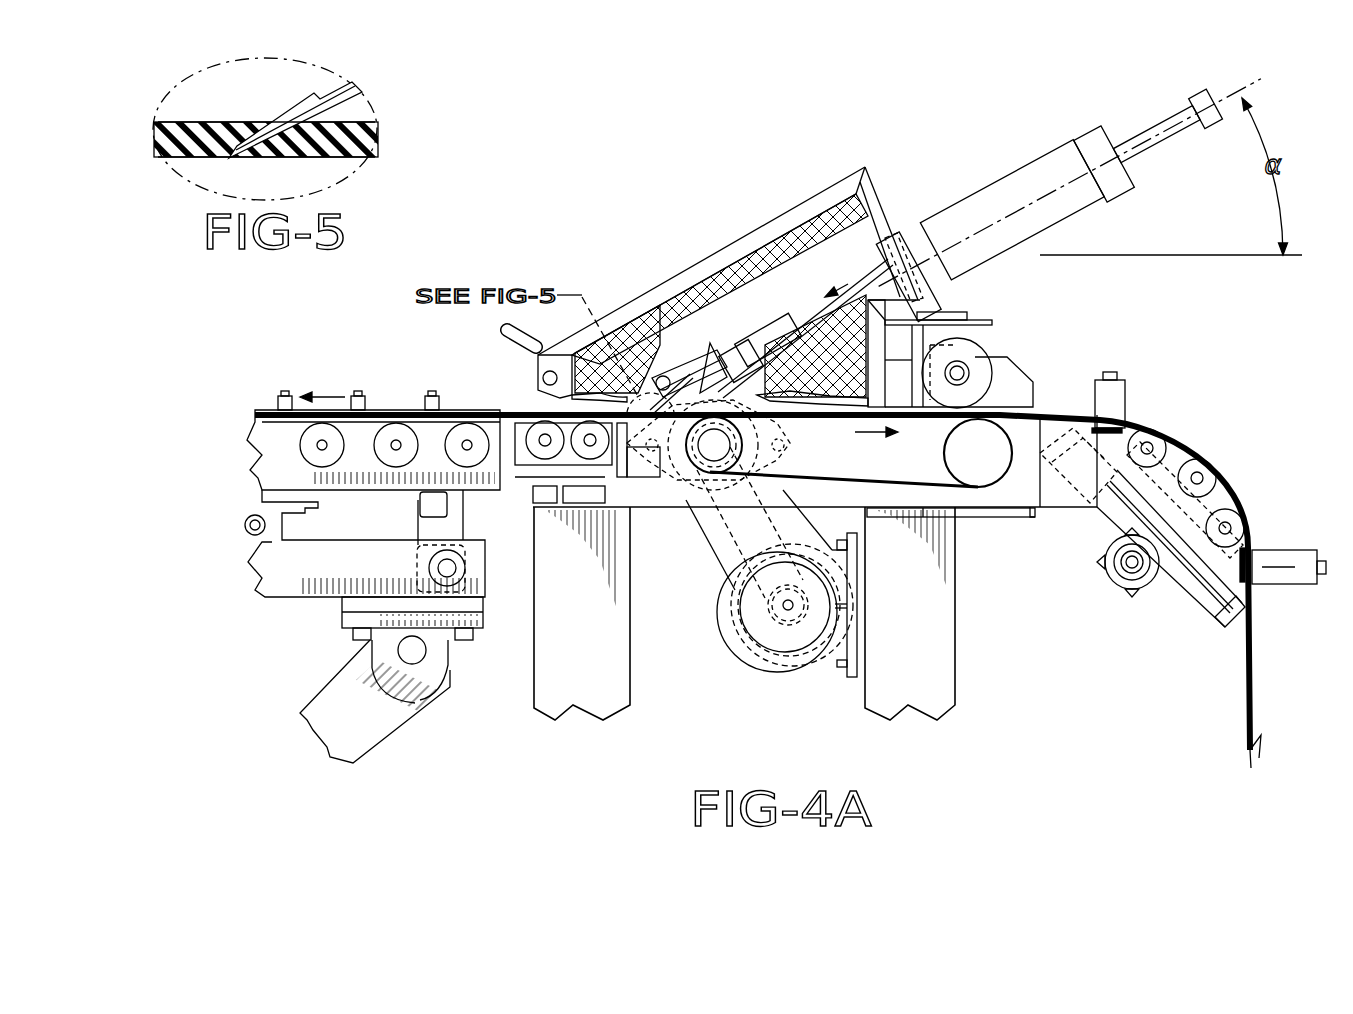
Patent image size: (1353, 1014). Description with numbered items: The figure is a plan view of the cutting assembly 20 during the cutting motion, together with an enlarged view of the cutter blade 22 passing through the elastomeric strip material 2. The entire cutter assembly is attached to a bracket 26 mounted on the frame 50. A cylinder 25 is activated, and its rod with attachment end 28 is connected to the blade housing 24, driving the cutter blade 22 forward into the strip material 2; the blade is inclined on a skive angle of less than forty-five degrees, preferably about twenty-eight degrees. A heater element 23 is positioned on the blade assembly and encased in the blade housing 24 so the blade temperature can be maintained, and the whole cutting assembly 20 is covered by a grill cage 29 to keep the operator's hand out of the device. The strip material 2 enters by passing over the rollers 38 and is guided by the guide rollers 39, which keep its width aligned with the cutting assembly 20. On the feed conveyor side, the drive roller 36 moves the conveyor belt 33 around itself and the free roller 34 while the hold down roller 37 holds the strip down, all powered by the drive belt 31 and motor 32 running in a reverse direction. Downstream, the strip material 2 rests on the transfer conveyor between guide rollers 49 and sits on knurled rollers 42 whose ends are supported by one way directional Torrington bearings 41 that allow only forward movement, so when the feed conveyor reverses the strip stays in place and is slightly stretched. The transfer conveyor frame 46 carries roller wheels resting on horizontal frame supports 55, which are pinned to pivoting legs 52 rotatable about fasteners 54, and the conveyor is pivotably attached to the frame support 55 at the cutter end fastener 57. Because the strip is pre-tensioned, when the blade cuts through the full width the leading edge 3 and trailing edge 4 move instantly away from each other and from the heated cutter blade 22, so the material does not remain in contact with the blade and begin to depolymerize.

In FIG. 5, the strip material 2 is at (160, 120).
In FIG. 4A, the strip material 2 is at (1260, 650).
In FIG. 5, the leading edge 3 is at (262, 158).
In FIG. 5, the trailing edge 4 is at (250, 121).
In FIG. 4A, the cutting assembly 20 is at (641, 200).
In FIG. 5, the cutter blade 22 is at (283, 122).
In FIG. 4A, the cutter blade 22 is at (648, 404).
In FIG. 4A, the heater element 23 is at (665, 376).
In FIG. 4A, the blade housing 24 is at (705, 358).
In FIG. 4A, the cylinder 25 is at (1022, 167).
In FIG. 4A, the bracket 26 is at (930, 277).
In FIG. 4A, the attachment end 28 is at (778, 337).
In FIG. 4A, the grill cage 29 is at (752, 230).
In FIG. 4A, the drive belt 31 is at (707, 540).
In FIG. 4A, the motor 32 is at (733, 648).
In FIG. 4A, the conveyor belt 33 is at (816, 478).
In FIG. 4A, the free roller 34 is at (1000, 447).
In FIG. 4A, the drive roller 36 is at (697, 462).
In FIG. 4A, the hold down roller 37 is at (975, 352).
In FIG. 4A, the rollers 38 is at (580, 452).
In FIG. 4A, the guide rollers 39 is at (1113, 380).
In FIG. 4A, the one way directional Torrington bearings 41 is at (400, 407).
In FIG. 4A, the knurled rollers 42 is at (468, 438).
In FIG. 4A, the frame of the transfer conveyor 46 is at (285, 473).
In FIG. 4A, the guide rollers 49 is at (366, 405).
In FIG. 4A, the frame 50 is at (578, 676).
In FIG. 4A, the pivoting legs 52 is at (350, 728).
In FIG. 4A, the fasteners 54 is at (425, 655).
In FIG. 4A, the horizontal frame supports 55 is at (303, 598).
In FIG. 4A, the cutter end fastener 57 is at (430, 568).